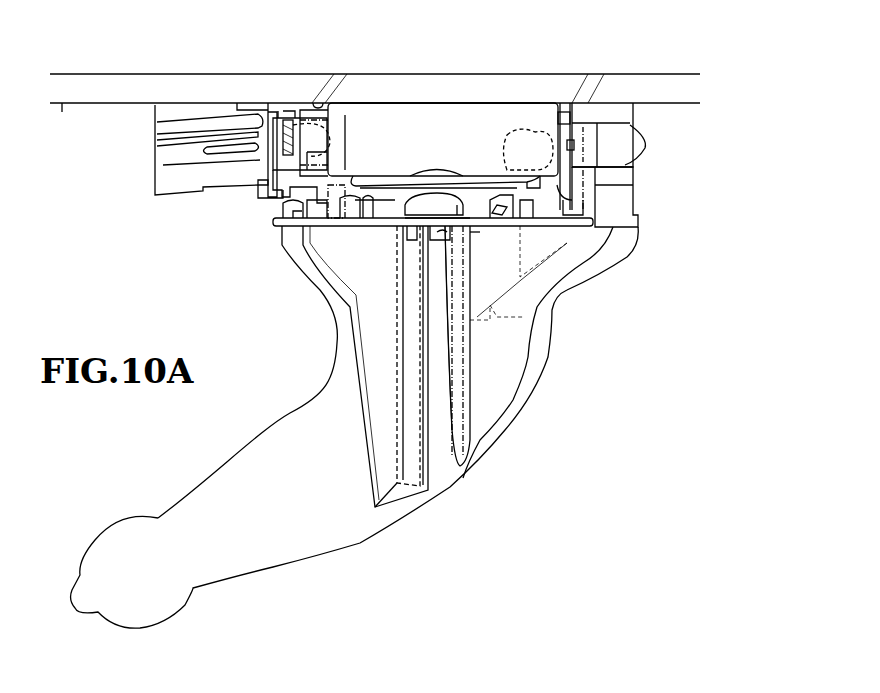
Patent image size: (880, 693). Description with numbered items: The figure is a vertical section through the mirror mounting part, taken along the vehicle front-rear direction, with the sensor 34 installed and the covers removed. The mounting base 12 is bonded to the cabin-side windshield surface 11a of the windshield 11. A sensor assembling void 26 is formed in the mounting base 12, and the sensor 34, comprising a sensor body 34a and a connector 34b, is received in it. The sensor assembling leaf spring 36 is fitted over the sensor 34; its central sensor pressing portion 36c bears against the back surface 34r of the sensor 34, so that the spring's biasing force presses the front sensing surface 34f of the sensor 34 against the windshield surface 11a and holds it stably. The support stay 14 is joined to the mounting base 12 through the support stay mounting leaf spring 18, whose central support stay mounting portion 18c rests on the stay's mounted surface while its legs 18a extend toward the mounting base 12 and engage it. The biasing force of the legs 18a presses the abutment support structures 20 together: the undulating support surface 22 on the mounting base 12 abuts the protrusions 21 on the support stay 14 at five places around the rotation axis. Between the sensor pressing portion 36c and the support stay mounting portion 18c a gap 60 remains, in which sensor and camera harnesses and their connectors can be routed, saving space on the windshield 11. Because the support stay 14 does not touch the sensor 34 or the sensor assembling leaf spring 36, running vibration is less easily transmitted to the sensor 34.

The windshield 11 is at (129, 88).
The windshield surface 11a is at (67, 108).
The mounting base 12 is at (618, 124).
The support stay 14 is at (315, 508).
The support stay mounting leaf spring 18 is at (420, 228).
The legs 18a is at (293, 195).
The support stay mounting portion 18c is at (452, 240).
The abutment support structures 20 is at (730, 170).
The protrusions 21 is at (320, 199).
The support surface 22 is at (622, 179).
The sensor assembling void 26 is at (503, 140).
The sensor 34 is at (480, 134).
The sensor body 34a is at (360, 130).
The connector 34b is at (192, 183).
The front surface (sensing surface) 34f is at (397, 102).
The back surface (non-sensing surface) 34r is at (395, 227).
The sensor assembling leaf spring 36 is at (488, 200).
The sensor pressing portion 36c is at (436, 176).
The gap 60 is at (478, 228).